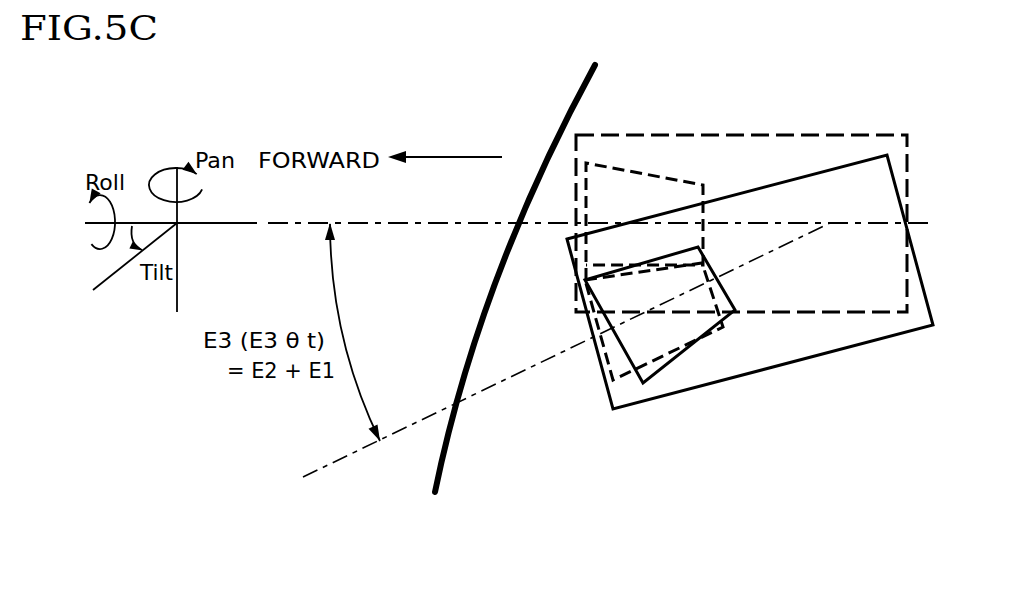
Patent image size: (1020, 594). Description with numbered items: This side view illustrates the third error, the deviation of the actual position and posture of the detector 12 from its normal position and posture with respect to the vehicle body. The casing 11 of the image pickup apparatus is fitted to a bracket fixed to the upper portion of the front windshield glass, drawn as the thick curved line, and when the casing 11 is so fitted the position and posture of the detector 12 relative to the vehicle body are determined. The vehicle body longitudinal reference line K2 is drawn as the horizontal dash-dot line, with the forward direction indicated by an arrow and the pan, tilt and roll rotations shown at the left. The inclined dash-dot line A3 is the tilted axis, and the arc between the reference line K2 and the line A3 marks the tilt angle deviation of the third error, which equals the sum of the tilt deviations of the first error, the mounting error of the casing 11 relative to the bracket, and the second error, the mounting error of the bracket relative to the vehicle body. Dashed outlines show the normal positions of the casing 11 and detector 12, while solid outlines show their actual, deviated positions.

The casing 11 is at (837, 351).
The detector 12 is at (665, 368).
The vehicle body longitudinal reference line K2 is at (288, 222).
The axis A3 is at (312, 472).